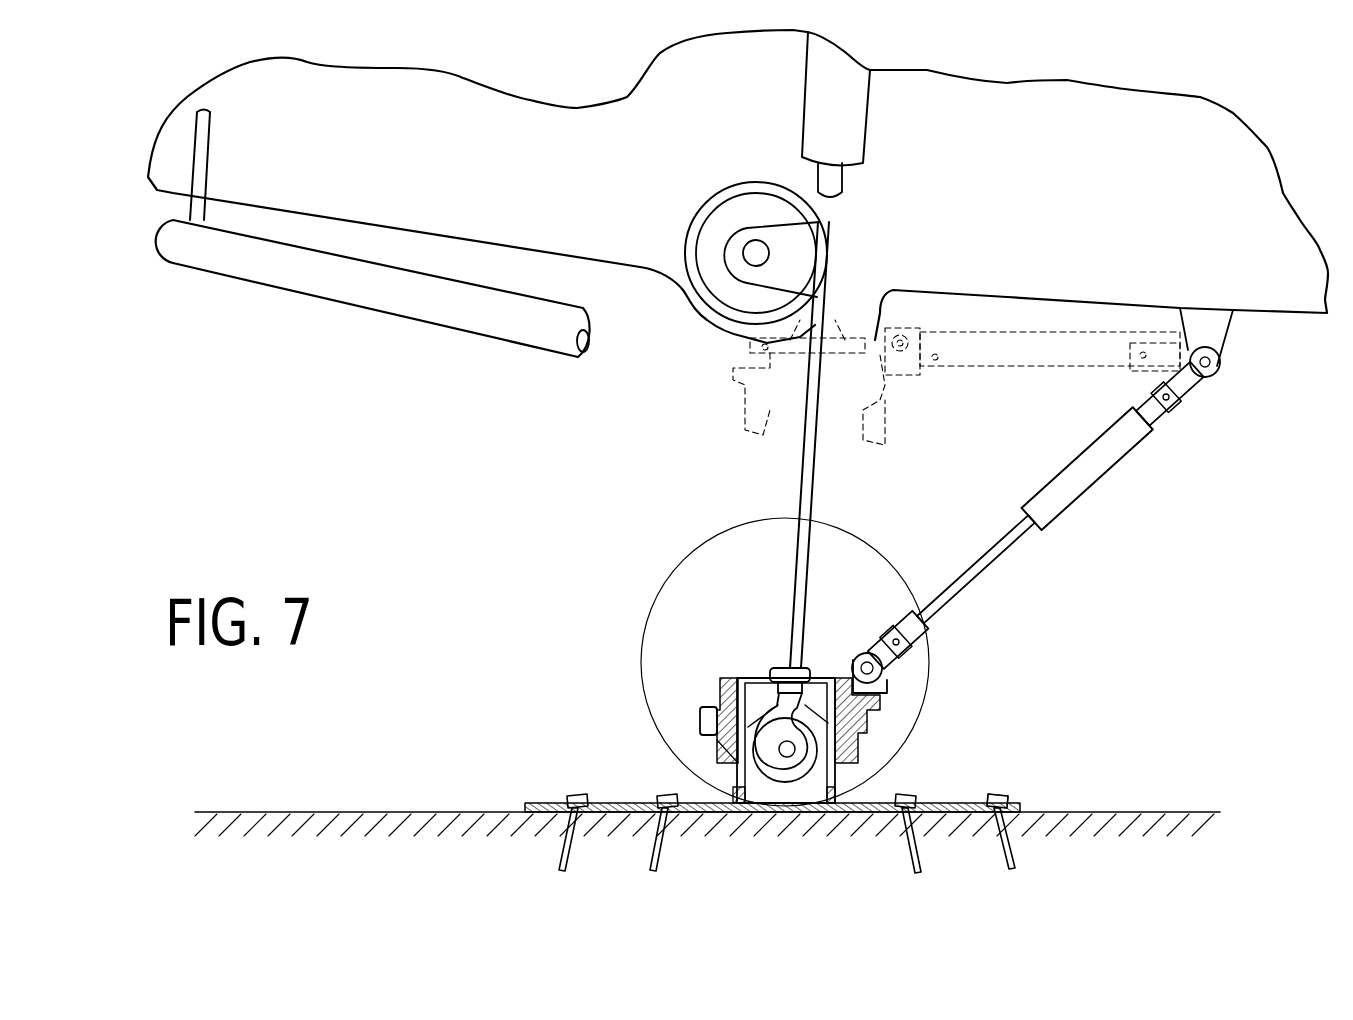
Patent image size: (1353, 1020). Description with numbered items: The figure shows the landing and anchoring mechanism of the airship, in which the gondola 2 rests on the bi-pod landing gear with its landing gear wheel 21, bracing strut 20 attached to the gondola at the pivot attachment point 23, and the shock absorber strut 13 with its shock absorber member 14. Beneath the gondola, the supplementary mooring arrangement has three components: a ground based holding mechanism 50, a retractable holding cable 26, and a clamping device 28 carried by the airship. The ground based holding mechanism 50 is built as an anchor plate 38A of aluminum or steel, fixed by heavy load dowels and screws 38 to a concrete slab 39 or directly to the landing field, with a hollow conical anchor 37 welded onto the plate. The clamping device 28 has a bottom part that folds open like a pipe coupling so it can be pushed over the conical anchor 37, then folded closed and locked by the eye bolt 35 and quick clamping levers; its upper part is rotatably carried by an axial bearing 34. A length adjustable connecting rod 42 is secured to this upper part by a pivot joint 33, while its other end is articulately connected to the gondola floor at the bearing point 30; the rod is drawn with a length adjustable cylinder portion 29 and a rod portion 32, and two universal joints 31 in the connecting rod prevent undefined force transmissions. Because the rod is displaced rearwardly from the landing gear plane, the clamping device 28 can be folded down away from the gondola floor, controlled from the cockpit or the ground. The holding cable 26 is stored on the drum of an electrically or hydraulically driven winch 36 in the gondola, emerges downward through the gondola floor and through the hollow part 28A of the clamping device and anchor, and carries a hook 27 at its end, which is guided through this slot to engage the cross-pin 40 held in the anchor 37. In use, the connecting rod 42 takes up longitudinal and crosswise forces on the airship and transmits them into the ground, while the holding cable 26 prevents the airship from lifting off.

The airship gondola 2 is at (430, 210).
The shock absorber strut 13 is at (840, 117).
The shock absorber member 14 is at (827, 180).
The bracing strut 20 is at (303, 277).
The landing gear wheel 21 is at (717, 583).
The pivot attachment point 23 is at (200, 163).
The holding cable 26 is at (803, 478).
The hook 27 is at (773, 670).
The clamping device 28 is at (740, 418).
The hollow part 28A is at (813, 700).
The hydraulic cylinder 29 is at (1072, 488).
The bearing point 30 is at (1220, 357).
The universal joint 31 is at (1177, 410).
The piston rod 32 is at (970, 573).
The pivot joint 33 is at (880, 680).
The axial bearing 34 is at (727, 688).
The eye bolt 35 is at (707, 727).
The winch 36 is at (733, 213).
The anchor 37 is at (733, 743).
The heavy load dowels and screws 38 is at (1010, 850).
The anchor plate 38A is at (1013, 807).
The concrete slab 39 is at (377, 822).
The cross-pin 40 is at (733, 793).
The connecting rod 42 is at (992, 522).
The ground based holding mechanism 50 is at (948, 800).